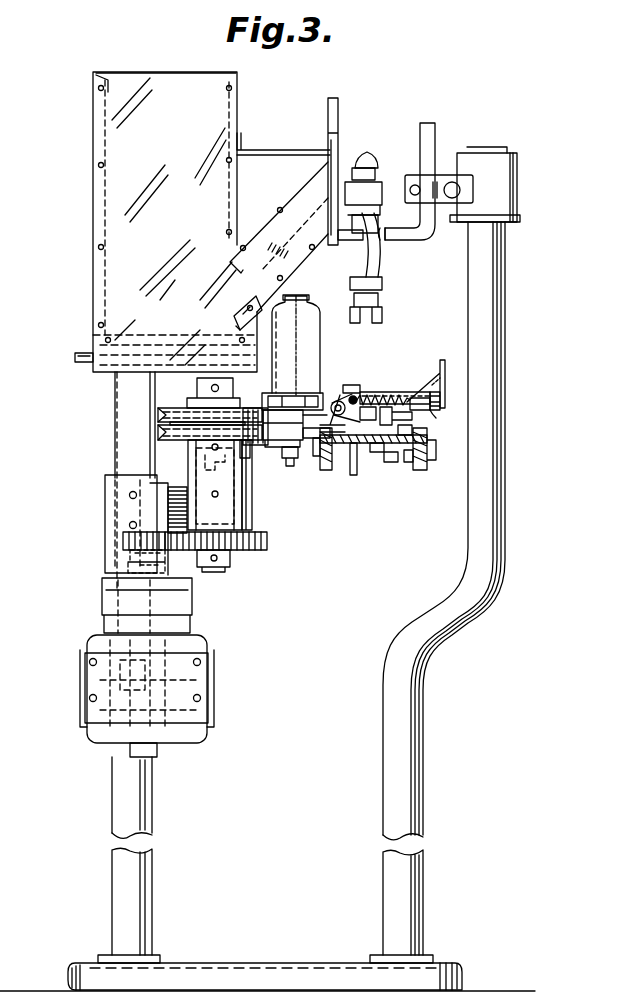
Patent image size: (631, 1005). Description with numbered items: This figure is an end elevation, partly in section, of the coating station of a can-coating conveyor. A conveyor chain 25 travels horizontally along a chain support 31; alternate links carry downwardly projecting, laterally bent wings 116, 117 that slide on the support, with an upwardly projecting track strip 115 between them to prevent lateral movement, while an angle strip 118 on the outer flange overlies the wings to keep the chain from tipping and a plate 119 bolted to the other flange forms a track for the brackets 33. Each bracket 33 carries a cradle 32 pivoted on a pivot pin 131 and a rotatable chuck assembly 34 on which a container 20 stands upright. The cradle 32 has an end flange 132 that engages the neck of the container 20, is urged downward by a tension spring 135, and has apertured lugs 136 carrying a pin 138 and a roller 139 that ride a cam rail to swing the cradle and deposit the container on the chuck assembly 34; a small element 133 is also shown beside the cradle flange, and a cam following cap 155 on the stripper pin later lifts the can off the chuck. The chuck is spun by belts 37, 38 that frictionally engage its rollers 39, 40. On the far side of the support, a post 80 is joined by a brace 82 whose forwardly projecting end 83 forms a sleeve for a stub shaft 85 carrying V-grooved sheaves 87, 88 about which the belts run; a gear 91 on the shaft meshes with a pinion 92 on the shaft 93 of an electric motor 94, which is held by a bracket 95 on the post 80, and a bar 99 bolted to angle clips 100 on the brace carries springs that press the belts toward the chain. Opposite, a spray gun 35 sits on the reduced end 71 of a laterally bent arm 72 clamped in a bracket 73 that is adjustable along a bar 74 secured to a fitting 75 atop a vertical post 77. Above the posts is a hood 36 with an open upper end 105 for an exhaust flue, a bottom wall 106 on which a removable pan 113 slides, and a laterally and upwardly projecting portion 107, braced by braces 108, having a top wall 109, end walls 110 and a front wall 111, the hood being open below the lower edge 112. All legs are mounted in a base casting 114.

The container 20 is at (322, 347).
The conveyor chain 25 is at (358, 445).
The chain support 31 is at (350, 448).
The cradle 32 is at (392, 390).
The bracket 33 is at (393, 421).
The chuck assembly 34 is at (343, 390).
The spray gun 35 is at (382, 265).
The hood 36 is at (90, 233).
The belt 37 is at (160, 412).
The belt 38 is at (160, 430).
The roller 39 is at (278, 403).
The roller 40 is at (285, 425).
The reduced end 71 is at (345, 243).
The laterally bent arm 72 is at (434, 232).
The bracket 73 is at (415, 182).
The bar 74 is at (452, 182).
The fitting 75 is at (493, 175).
The vertical post 77 is at (485, 333).
The post 80 is at (115, 860).
The brace 82 is at (160, 504).
The forwardly projecting end 83 is at (240, 522).
The stub shaft 85 is at (243, 516).
The sheave 87 is at (180, 412).
The sheave 88 is at (177, 441).
The gear 91 is at (266, 548).
The pinion 92 is at (124, 543).
The motor shaft 93 is at (130, 565).
The electric motor 94 is at (100, 640).
The bracket 95 is at (175, 660).
The bar 99 is at (250, 440).
The angle clip 100 is at (247, 452).
The open upper end 105 is at (135, 72).
The bottom wall 106 is at (98, 375).
The laterally and upwardly projecting portion 107 is at (256, 216).
The brace 108 is at (258, 150).
The top wall 109 is at (297, 175).
The end wall 110 is at (256, 292).
The front wall 111 is at (333, 185).
The lower edge 112 is at (320, 227).
The removable pan 113 is at (85, 352).
The base casting 114 is at (292, 940).
The track strip 115 is at (375, 452).
The wing 116 is at (414, 460).
The wing 117 is at (392, 462).
The angle strip 118 is at (430, 440).
The plate 119 is at (326, 470).
The pivot pin 131 is at (345, 400).
The end flange 132 is at (440, 372).
The lug 133 is at (405, 358).
The tension spring 135 is at (405, 393).
The apertured lug 136 is at (436, 415).
The pin 138 is at (440, 396).
The roller 139 is at (448, 422).
The cam following cap 155 is at (290, 462).